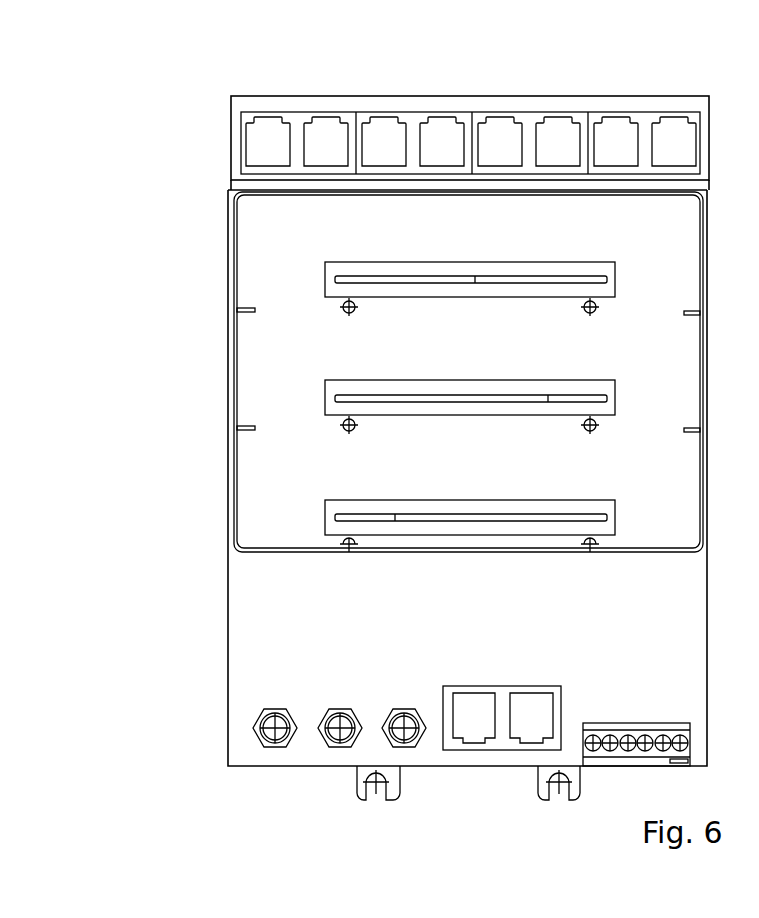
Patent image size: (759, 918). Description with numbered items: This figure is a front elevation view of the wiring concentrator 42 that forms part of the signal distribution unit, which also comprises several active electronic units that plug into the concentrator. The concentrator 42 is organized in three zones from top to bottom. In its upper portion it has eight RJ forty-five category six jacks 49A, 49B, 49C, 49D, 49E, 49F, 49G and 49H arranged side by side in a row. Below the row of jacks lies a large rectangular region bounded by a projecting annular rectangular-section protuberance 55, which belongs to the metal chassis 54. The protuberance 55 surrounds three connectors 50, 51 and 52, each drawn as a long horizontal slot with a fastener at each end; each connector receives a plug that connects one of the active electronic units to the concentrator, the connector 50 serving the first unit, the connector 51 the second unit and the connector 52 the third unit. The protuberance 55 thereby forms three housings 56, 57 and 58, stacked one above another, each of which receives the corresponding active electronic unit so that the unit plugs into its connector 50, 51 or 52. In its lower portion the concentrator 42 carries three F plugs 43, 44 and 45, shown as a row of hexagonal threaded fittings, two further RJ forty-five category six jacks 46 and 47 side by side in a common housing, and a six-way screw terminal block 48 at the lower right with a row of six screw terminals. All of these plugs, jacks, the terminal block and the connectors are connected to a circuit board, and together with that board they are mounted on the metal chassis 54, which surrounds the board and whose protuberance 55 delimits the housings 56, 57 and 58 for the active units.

The wiring concentrator 42 is at (200, 118).
The F plug 43 is at (268, 745).
The F plug 44 is at (336, 745).
The F plug 45 is at (410, 746).
The RJ 45 category 6 jack 46 is at (470, 706).
The RJ 45 category 6 jack 47 is at (530, 706).
The six-way screw terminal block 48 is at (633, 722).
The RJ 45 category 6 jack 49A is at (268, 138).
The RJ 45 category 6 jack 49B is at (326, 138).
The RJ 45 category 6 jack 49C is at (384, 138).
The RJ 45 category 6 jack 49D is at (442, 138).
The RJ 45 category 6 jack 49E is at (501, 138).
The RJ 45 category 6 jack 49F is at (557, 138).
The RJ 45 category 6 jack 49G is at (615, 138).
The RJ 45 category 6 jack 49H is at (674, 138).
The connector 50 is at (565, 268).
The connector 51 is at (553, 388).
The connector 52 is at (548, 510).
The metal chassis 54 is at (240, 645).
The protuberance 55 is at (275, 553).
The housing 56 is at (298, 245).
The housing 57 is at (295, 367).
The housing 58 is at (295, 483).